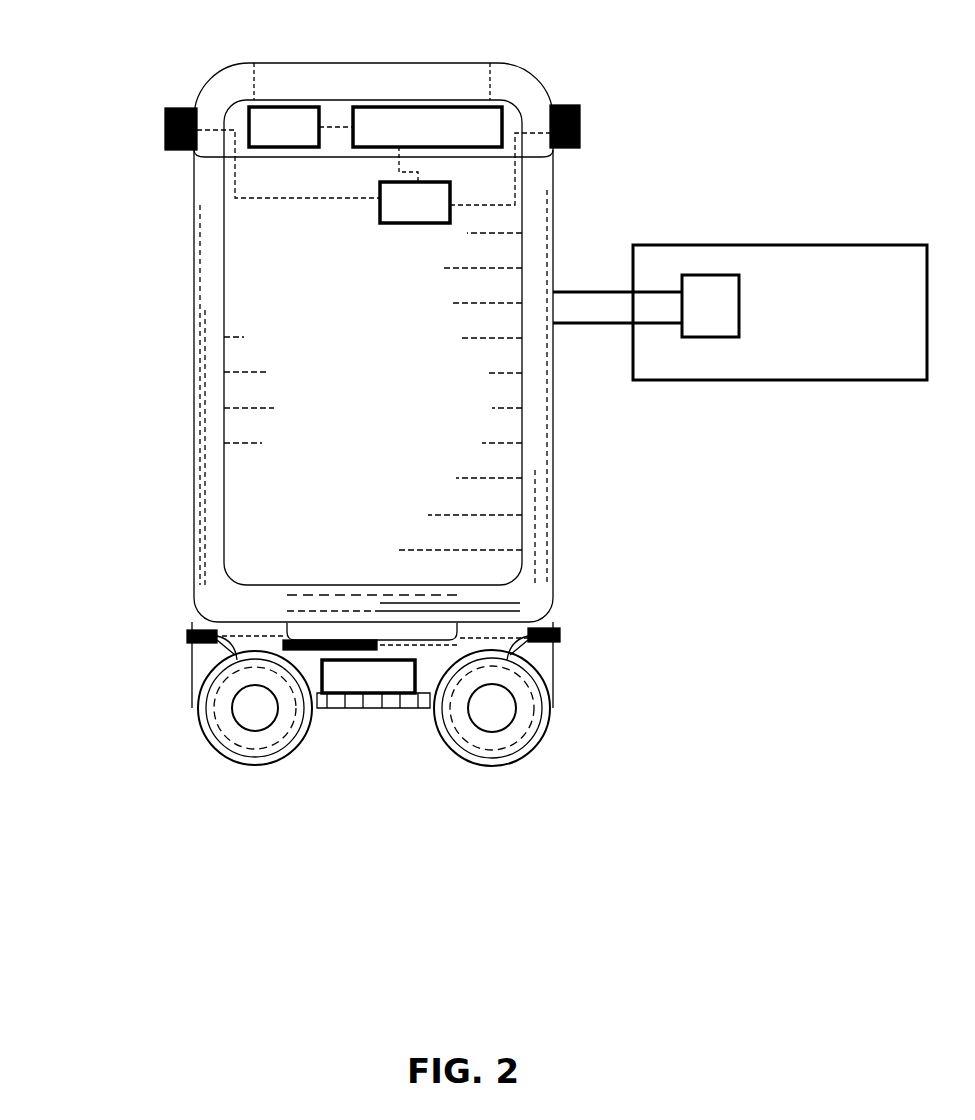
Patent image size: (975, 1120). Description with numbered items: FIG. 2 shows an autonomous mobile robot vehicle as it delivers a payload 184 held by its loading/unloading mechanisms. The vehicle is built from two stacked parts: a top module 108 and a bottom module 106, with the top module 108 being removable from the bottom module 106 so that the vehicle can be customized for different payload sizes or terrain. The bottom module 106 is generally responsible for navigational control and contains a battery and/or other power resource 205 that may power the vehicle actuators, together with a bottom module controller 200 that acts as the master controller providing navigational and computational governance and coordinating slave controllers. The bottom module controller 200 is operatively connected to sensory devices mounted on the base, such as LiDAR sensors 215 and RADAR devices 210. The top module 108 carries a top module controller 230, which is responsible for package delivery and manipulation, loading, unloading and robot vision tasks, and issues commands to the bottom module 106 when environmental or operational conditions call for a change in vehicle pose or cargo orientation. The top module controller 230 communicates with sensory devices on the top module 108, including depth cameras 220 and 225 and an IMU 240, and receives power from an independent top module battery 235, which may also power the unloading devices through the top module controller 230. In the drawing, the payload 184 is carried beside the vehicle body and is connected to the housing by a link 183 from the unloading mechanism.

The top module 108 is at (194, 395).
The bottom module 106 is at (192, 622).
The depth camera 220 is at (165, 128).
The depth camera 225 is at (580, 105).
The IMU 240 is at (280, 122).
The top module battery 235 is at (428, 105).
The top module controller 230 is at (420, 205).
The payload 184 is at (808, 280).
The charging connector 183 is at (578, 325).
The bottom module controller 200 is at (285, 607).
The battery and/or other power resource 205 is at (383, 697).
The RADAR device 210 is at (187, 645).
The LiDAR sensor 215 is at (560, 636).